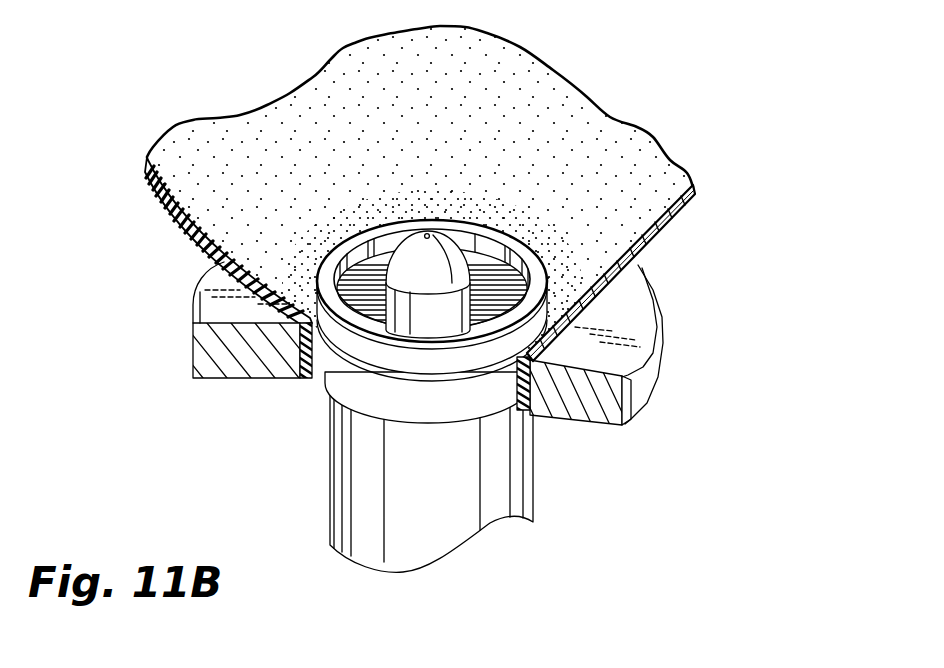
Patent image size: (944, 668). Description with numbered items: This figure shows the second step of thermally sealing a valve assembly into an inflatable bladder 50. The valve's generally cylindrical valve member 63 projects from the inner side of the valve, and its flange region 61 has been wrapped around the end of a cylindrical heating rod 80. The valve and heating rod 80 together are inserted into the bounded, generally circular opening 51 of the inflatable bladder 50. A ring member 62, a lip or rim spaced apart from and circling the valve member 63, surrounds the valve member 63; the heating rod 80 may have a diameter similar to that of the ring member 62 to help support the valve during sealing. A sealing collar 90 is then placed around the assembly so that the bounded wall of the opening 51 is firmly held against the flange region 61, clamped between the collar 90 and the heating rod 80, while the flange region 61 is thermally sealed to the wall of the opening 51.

The inflatable bladder 50 is at (590, 97).
The opening 51 is at (504, 388).
The flange region 61 is at (332, 380).
The ring member 62 is at (527, 252).
The valve member 63 is at (387, 272).
The heating rod 80 is at (328, 462).
The sealing collar 90 is at (187, 337).